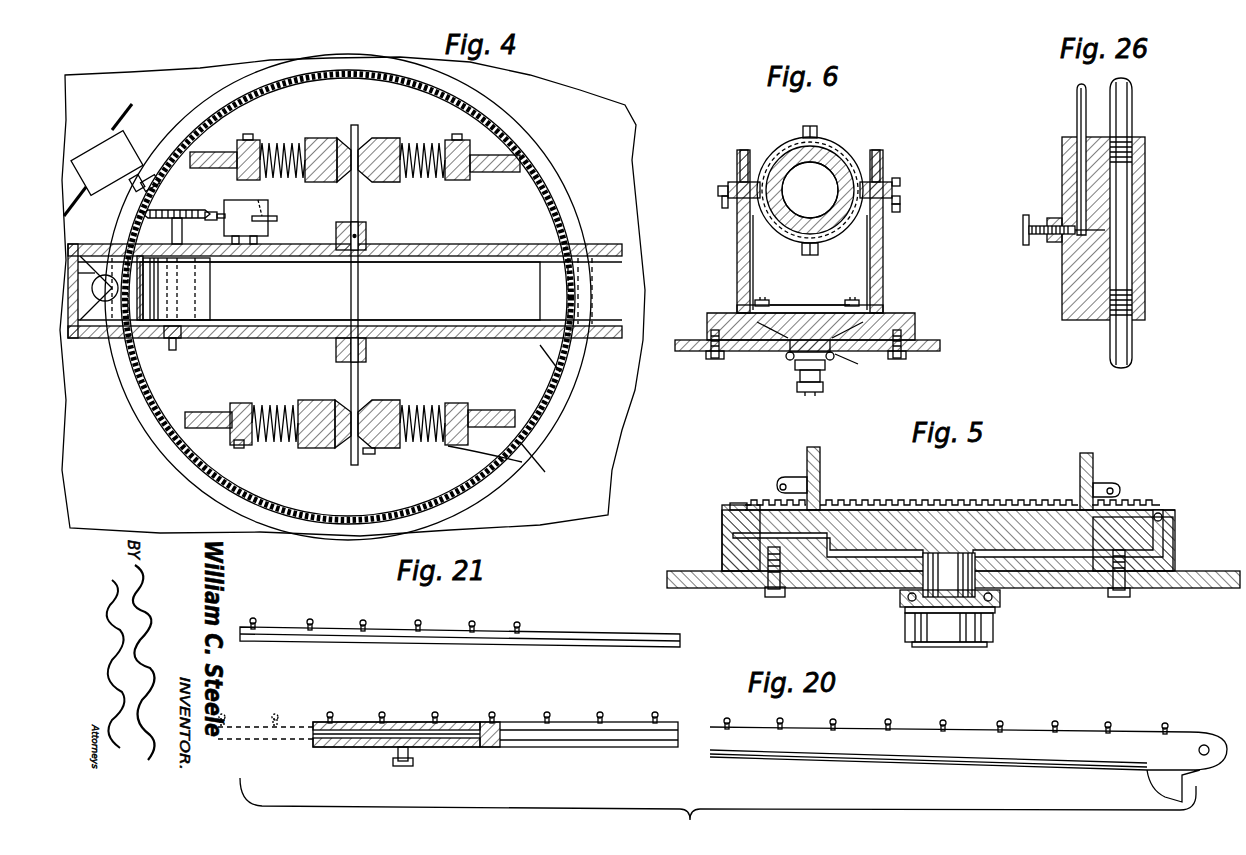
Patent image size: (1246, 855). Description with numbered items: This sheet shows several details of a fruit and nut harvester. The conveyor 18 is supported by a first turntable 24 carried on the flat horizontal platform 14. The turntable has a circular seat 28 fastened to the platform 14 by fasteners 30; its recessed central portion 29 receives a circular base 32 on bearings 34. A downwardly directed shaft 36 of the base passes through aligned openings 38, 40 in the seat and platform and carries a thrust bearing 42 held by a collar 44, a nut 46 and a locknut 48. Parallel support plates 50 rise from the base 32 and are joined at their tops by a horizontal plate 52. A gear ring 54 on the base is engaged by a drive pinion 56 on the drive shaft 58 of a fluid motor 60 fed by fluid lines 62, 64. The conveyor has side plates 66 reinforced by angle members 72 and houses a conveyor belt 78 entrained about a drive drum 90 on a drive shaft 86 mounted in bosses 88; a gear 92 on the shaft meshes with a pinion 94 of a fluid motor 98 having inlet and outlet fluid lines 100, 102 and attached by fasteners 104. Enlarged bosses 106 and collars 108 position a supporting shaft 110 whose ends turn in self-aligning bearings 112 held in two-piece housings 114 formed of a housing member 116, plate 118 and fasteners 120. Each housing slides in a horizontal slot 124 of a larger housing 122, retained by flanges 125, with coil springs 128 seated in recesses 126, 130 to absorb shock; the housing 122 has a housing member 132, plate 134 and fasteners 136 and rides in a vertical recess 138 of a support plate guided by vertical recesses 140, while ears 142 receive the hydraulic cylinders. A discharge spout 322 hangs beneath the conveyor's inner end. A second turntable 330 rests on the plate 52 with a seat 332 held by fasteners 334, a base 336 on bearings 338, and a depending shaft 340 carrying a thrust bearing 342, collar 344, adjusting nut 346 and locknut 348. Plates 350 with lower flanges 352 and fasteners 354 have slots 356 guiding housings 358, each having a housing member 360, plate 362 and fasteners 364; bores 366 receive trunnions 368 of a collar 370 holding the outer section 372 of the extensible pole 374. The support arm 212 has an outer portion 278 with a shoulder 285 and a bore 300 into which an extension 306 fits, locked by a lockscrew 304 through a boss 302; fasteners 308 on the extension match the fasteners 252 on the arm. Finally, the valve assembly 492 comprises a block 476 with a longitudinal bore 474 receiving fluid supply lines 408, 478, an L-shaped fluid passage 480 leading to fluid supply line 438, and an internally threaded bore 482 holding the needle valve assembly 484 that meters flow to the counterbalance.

In FIG. 4, the flat horizontal support (platform) 14 is at (612, 128).
In FIG. 5, the flat horizontal support (platform) 14 is at (1207, 573).
In FIG. 4, the conveyor 18 is at (523, 339).
In FIG. 5, the first turntable 24 is at (1094, 466).
In FIG. 4, the seat 28 is at (578, 368).
In FIG. 5, the seat 28 is at (1170, 545).
In FIG. 5, the recessed central portion 29 is at (1165, 514).
In FIG. 5, the fasteners 30 is at (776, 597).
In FIG. 4, the circular base 32 is at (353, 297).
In FIG. 5, the circular base 32 is at (937, 510).
In FIG. 5, the bearings 34 is at (822, 540).
In FIG. 5, the shaft 36 is at (950, 560).
In FIG. 5, the opening 38 is at (905, 590).
In FIG. 5, the opening 40 is at (992, 597).
In FIG. 5, the thrust bearing 42 is at (908, 600).
In FIG. 5, the collar 44 is at (997, 611).
In FIG. 5, the nut 46 is at (906, 622).
In FIG. 5, the locknut 48 is at (986, 643).
In FIG. 4, the support plates 50 is at (492, 156).
In FIG. 5, the support plates 50 is at (821, 468).
In FIG. 6, the horizontal plate 52 is at (687, 352).
In FIG. 4, the gear ring 54 is at (562, 184).
In FIG. 5, the gear ring 54 is at (745, 503).
In FIG. 4, the drive pinion 56 is at (148, 176).
In FIG. 4, the drive shaft 58 is at (132, 186).
In FIG. 4, the fluid motor 60 is at (93, 142).
In FIG. 4, the fluid line 62 is at (122, 112).
In FIG. 4, the fluid line 64 is at (79, 208).
In FIG. 4, the side plates 66 is at (294, 245).
In FIG. 4, the angle members 72 is at (438, 245).
In FIG. 4, the conveyor belt 78 is at (498, 262).
In FIG. 4, the drive shaft 86 is at (172, 350).
In FIG. 4, the bosses 88 is at (181, 339).
In FIG. 4, the drive drum 90 is at (208, 296).
In FIG. 4, the gear 92 is at (178, 210).
In FIG. 4, the pinion 94 is at (211, 211).
In FIG. 4, the fluid motor 98 is at (246, 210).
In FIG. 4, the inlet fluid line 100 is at (280, 218).
In FIG. 4, the outlet fluid line 102 is at (265, 203).
In FIG. 4, the fasteners 104 is at (241, 244).
In FIG. 4, the enlarged bosses 106 is at (368, 236).
In FIG. 4, the collars 108 is at (360, 226).
In FIG. 4, the supporting shaft 110 is at (358, 384).
In FIG. 4, the self-aligning bearings 112 is at (358, 148).
In FIG. 4, the two-piece housing 114 is at (404, 183).
In FIG. 4, the housing member 116 is at (304, 401).
In FIG. 4, the removable plate 118 is at (368, 453).
In FIG. 4, the fasteners 120 is at (388, 452).
In FIG. 4, the housing 122 is at (460, 182).
In FIG. 4, the horizontal slot 124 is at (284, 443).
In FIG. 4, the flanges 125 is at (286, 380).
In FIG. 4, the recess 126 is at (256, 404).
In FIG. 4, the coil spring 128 is at (281, 147).
In FIG. 4, the recess 130 is at (312, 448).
In FIG. 4, the housing member 132 is at (478, 410).
In FIG. 4, the removable plate 134 is at (505, 408).
In FIG. 4, the fasteners 136 is at (452, 446).
In FIG. 4, the vertical recess 138 is at (236, 440).
In FIG. 4, the vertical recesses 140 is at (233, 405).
In FIG. 5, the ear 142 is at (788, 479).
In FIG. 20, the support arm 212 is at (1003, 766).
In FIG. 21, the fasteners 252 is at (656, 715).
In FIG. 20, the outer portion 278 is at (1125, 735).
In FIG. 20, the shoulder 285 is at (1185, 781).
In FIG. 21, the bore 300 is at (420, 722).
In FIG. 21, the boss 302 is at (410, 752).
In FIG. 21, the lockscrew 304 is at (403, 767).
In FIG. 21, the extension 306 is at (552, 640).
In FIG. 21, the fasteners 308 is at (366, 619).
In FIG. 4, the discharge spout 322 is at (100, 322).
In FIG. 6, the second turntable 330 is at (920, 314).
In FIG. 6, the seat 332 is at (913, 336).
In FIG. 6, the fasteners 334 is at (715, 360).
In FIG. 6, the base 336 is at (895, 312).
In FIG. 6, the bearings 338 is at (860, 365).
In FIG. 6, the depending shaft 340 is at (789, 359).
In FIG. 6, the thrust bearing 342 is at (828, 370).
In FIG. 6, the collar 344 is at (801, 381).
In FIG. 6, the adjusting nut 346 is at (813, 399).
In FIG. 6, the locknut 348 is at (822, 390).
In FIG. 6, the plates 350 is at (751, 283).
In FIG. 6, the lower flanges 352 is at (787, 306).
In FIG. 6, the fasteners 354 is at (770, 296).
In FIG. 6, the slots 356 is at (888, 166).
In FIG. 6, the housings 358 is at (723, 206).
In FIG. 6, the housing member 360 is at (822, 246).
In FIG. 6, the removable plate 362 is at (897, 178).
In FIG. 6, the fasteners 364 is at (900, 194).
In FIG. 6, the bores 366 is at (738, 174).
In FIG. 6, the trunnions 368 is at (718, 192).
In FIG. 6, the collar 370 is at (822, 146).
In FIG. 6, the outer section 372 is at (788, 162).
In FIG. 6, the extensible pole 374 is at (795, 210).
In FIG. 26, the fluid supply line 408 is at (1130, 116).
In FIG. 26, the fluid supply line 438 is at (1077, 114).
In FIG. 26, the longitudinal bore 474 is at (1130, 247).
In FIG. 26, the block 476 is at (1083, 320).
In FIG. 26, the fluid supply line 478 is at (1128, 352).
In FIG. 26, the L-shaped fluid passage 480 is at (1078, 190).
In FIG. 26, the internally threaded bore 482 is at (1052, 243).
In FIG. 26, the needle valve assembly 484 is at (1022, 231).
In FIG. 26, the valve assembly 492 is at (1147, 198).